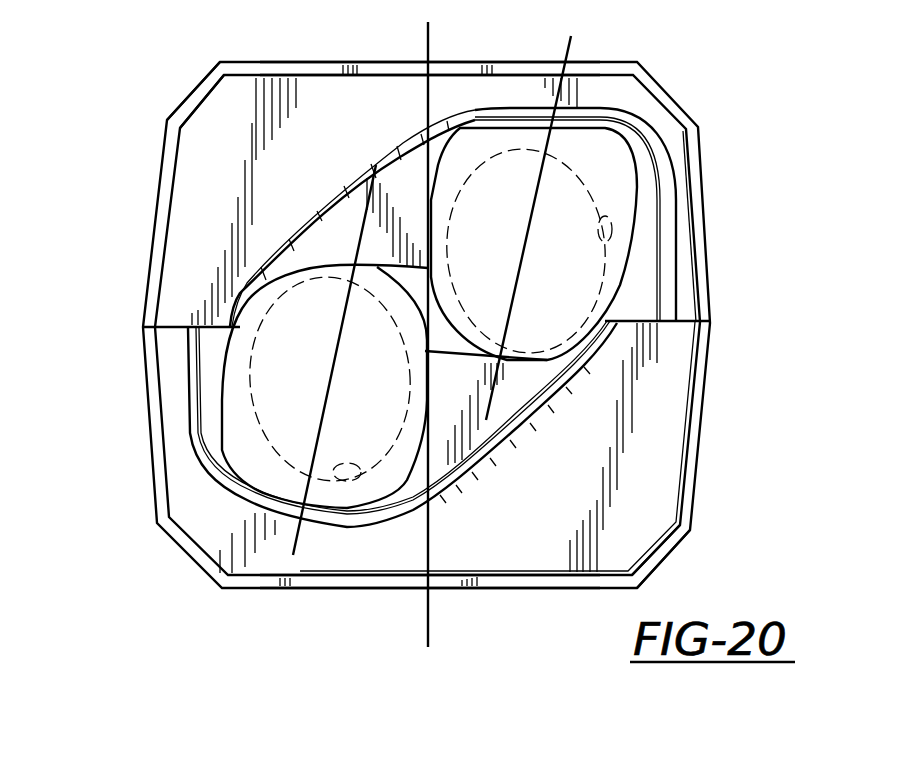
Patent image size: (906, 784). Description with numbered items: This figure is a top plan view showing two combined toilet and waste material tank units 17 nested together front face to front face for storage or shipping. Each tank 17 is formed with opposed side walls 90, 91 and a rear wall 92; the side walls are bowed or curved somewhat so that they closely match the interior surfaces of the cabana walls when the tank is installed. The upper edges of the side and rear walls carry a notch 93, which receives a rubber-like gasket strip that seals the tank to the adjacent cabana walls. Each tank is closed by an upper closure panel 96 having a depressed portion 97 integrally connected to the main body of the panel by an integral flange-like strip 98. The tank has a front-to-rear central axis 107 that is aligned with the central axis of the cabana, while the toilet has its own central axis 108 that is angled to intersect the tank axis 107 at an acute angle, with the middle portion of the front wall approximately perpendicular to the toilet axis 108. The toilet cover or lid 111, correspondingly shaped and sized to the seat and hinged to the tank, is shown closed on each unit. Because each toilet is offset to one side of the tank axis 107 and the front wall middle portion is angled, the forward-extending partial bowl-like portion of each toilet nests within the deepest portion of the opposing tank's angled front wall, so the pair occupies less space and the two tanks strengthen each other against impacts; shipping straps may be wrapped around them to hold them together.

The combined toilet and waste material tank 17 is at (672, 141).
The side wall 90 is at (712, 290).
The side wall 91 is at (153, 208).
The rear wall 92 is at (293, 63).
The notch 93 is at (708, 193).
The upper closure panel 96 is at (205, 112).
The depressed portion 97 is at (414, 191).
The flange-like strip 98 is at (333, 200).
The central axis of the tank 107 is at (432, 50).
The central axis of the toilet 108 is at (570, 42).
The cover or lid 111 is at (537, 332).